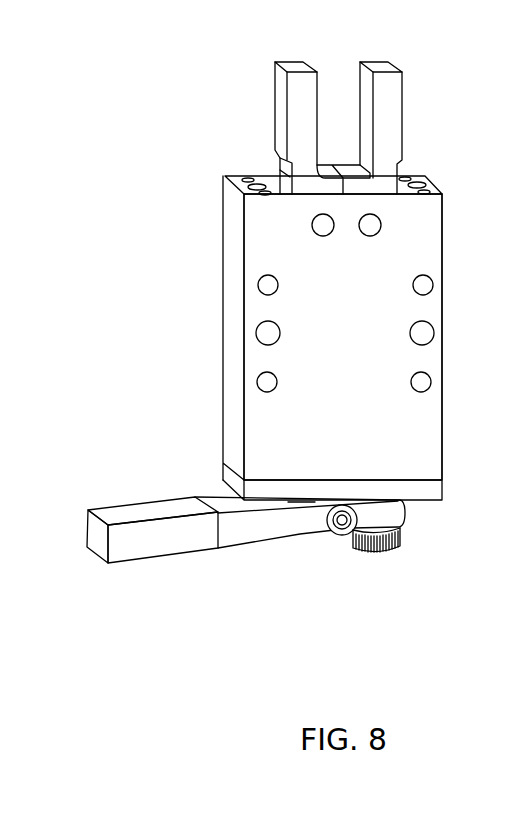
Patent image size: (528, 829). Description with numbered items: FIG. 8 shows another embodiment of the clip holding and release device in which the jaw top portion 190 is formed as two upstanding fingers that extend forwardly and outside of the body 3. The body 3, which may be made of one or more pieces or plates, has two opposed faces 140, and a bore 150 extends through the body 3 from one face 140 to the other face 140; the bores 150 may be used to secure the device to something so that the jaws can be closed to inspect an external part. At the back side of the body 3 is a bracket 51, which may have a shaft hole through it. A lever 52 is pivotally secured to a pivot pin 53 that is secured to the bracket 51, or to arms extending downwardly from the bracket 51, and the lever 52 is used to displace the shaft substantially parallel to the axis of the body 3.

The body 3 is at (353, 343).
The bracket 51 is at (427, 488).
The lever 52 is at (253, 530).
The pivot pin 53 is at (340, 522).
The face 140 is at (366, 328).
The bore 150 is at (421, 382).
The jaw top portion 190 is at (388, 113).